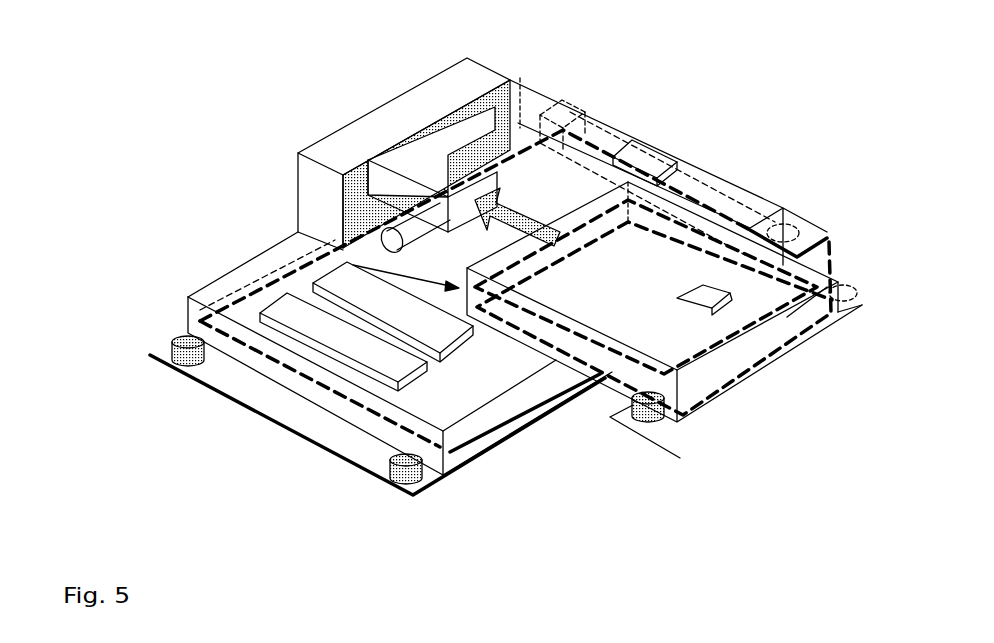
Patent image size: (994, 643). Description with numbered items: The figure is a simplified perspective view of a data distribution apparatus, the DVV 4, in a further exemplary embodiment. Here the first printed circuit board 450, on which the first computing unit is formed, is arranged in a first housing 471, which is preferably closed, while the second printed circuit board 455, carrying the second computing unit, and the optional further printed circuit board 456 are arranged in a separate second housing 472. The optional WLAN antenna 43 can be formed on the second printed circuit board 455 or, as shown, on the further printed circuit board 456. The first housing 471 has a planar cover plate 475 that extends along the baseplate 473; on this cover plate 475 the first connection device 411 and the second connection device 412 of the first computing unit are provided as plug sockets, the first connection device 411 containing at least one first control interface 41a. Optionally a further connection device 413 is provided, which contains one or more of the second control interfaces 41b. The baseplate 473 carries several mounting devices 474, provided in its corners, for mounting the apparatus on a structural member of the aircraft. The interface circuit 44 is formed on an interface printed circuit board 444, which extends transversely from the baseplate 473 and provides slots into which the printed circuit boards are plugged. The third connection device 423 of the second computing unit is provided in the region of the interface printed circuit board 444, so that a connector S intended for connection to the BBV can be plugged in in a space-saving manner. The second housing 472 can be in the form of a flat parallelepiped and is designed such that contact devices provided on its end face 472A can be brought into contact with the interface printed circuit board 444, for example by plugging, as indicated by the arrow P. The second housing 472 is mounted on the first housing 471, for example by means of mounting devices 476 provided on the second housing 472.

The DVV 4 is at (710, 38).
The interface circuit 44 is at (425, 151).
The interface printed circuit board 444 is at (368, 158).
The third connection device 423 is at (508, 102).
The connector S is at (570, 128).
The first connection device 411 is at (721, 144).
The first control interface 41a is at (680, 160).
The end face 472A is at (345, 246).
The further connection device 413 is at (318, 280).
The first housing 471 is at (188, 297).
The second connection device 412 is at (287, 314).
The second control interface 41b is at (304, 323).
The second housing 472 is at (800, 265).
The further printed circuit board 456 is at (818, 290).
The WLAN antenna 43 is at (703, 312).
The second printed circuit board 455 is at (725, 392).
The mounting devices 476 is at (648, 412).
The mounting devices 474 is at (178, 356).
The baseplate 473 is at (243, 384).
The cover plate 475 is at (430, 395).
The first printed circuit board 450 is at (473, 443).
The arrow P is at (520, 232).